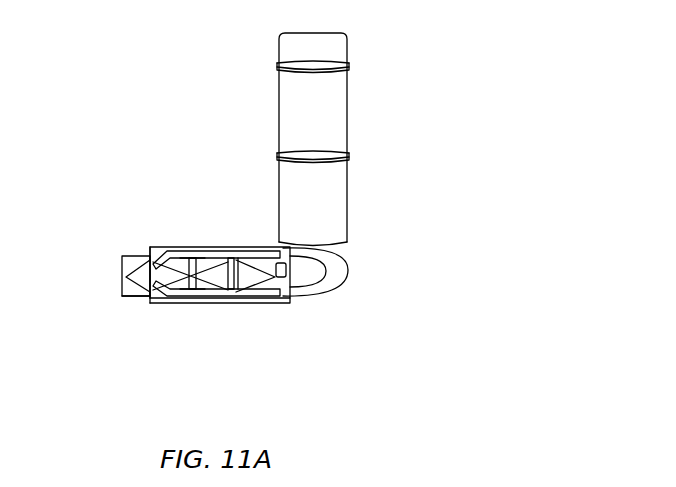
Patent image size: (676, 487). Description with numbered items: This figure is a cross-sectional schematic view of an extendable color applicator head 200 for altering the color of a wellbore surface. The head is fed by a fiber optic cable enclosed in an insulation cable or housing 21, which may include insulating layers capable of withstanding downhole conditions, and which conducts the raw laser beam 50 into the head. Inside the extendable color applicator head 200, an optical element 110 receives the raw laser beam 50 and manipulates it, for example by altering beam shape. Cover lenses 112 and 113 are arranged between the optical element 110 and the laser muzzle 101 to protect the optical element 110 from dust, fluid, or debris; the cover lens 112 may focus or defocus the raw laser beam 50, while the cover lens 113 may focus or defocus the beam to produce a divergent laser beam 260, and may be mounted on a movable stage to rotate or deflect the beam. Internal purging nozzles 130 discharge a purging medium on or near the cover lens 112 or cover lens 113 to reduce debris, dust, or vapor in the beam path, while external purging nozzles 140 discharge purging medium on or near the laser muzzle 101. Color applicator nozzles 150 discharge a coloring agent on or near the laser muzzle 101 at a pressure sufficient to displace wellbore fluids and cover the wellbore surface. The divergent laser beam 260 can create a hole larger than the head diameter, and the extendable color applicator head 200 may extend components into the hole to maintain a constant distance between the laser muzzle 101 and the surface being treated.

The insulation cable or housing 21 is at (278, 50).
The extendable color applicator head 200 is at (253, 245).
The laser muzzle 101 is at (148, 255).
The color applicator nozzles 150 is at (183, 252).
The external purging nozzles 140 is at (150, 280).
The divergent laser beam 260 is at (123, 297).
The cover lens 113 is at (183, 298).
The cover lens 112 is at (220, 303).
The internal purging nozzles 130 is at (240, 265).
The optical element 110 is at (284, 280).
The raw laser beam 50 is at (323, 287).